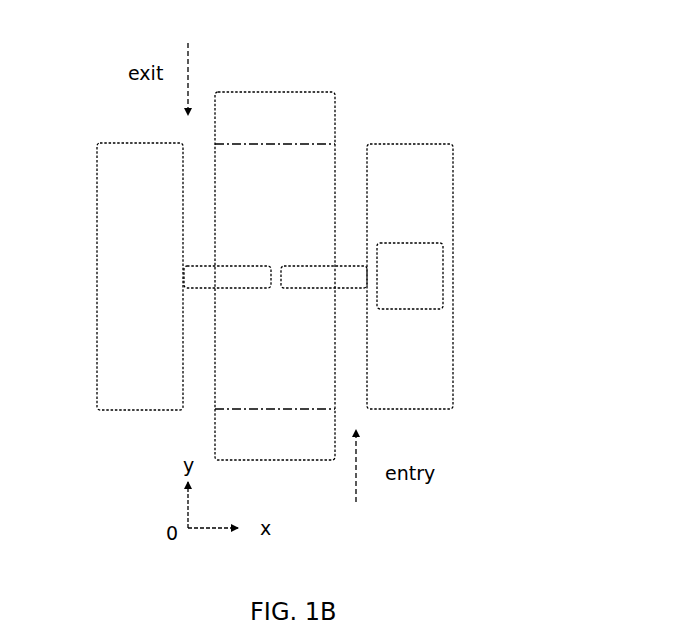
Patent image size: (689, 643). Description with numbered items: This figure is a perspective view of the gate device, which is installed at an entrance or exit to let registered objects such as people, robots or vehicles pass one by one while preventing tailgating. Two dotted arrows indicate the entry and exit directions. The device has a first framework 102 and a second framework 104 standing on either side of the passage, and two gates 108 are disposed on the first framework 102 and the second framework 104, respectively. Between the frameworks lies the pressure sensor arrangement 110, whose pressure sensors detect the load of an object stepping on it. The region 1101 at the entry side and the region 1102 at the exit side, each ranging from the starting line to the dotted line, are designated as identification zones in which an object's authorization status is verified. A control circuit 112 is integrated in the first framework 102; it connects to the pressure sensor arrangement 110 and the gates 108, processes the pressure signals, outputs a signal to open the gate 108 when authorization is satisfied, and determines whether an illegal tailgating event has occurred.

The first framework 102 is at (409, 143).
The second framework 104 is at (138, 143).
The gate 108 is at (335, 277).
The pressure sensor arrangement 110 is at (276, 93).
The region (identification zone at entry side) 1101 is at (304, 438).
The region (identification zone at exit side) 1102 is at (325, 107).
The control circuit 112 is at (442, 275).